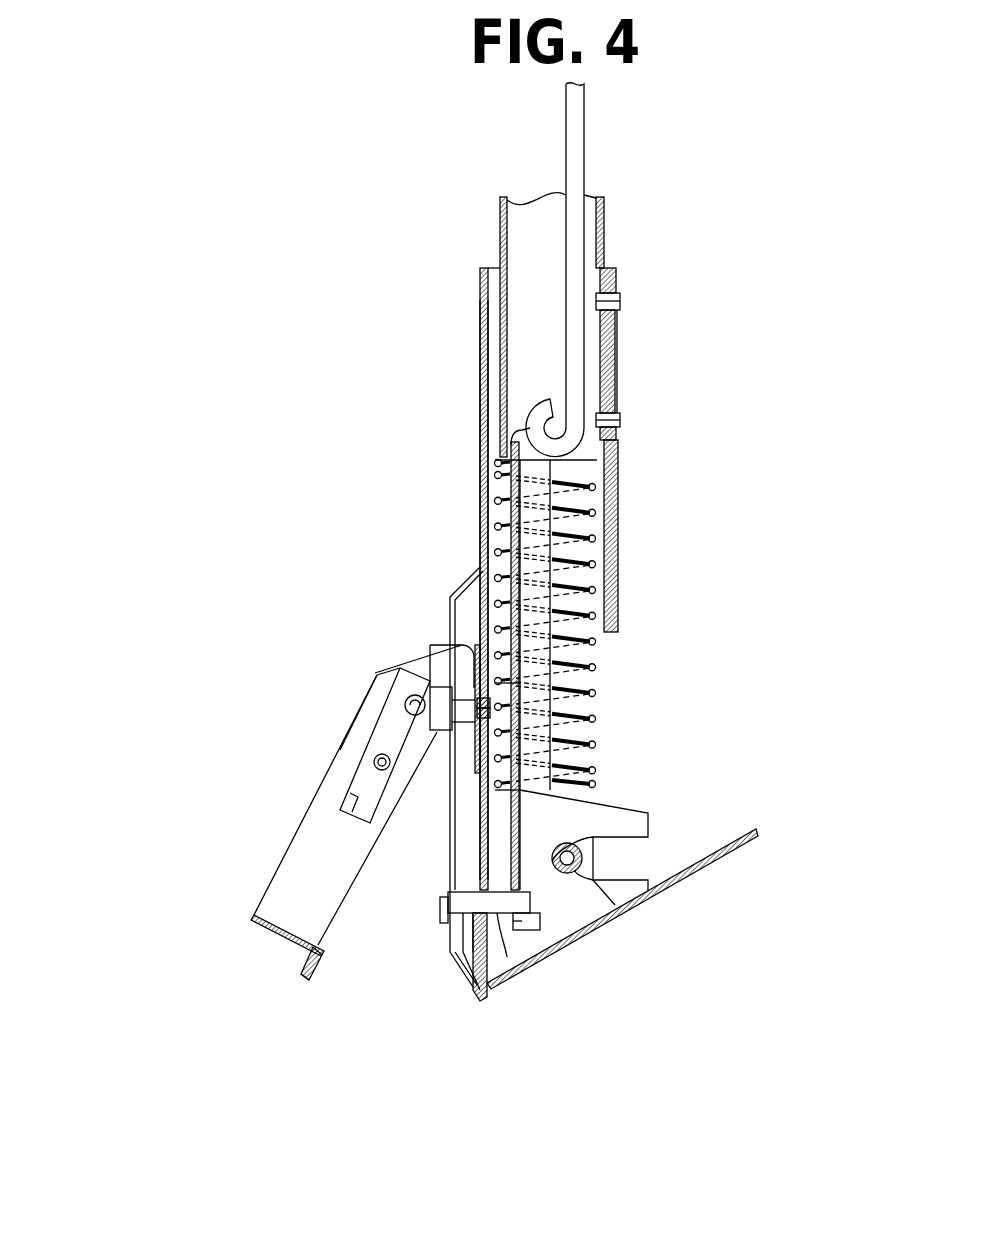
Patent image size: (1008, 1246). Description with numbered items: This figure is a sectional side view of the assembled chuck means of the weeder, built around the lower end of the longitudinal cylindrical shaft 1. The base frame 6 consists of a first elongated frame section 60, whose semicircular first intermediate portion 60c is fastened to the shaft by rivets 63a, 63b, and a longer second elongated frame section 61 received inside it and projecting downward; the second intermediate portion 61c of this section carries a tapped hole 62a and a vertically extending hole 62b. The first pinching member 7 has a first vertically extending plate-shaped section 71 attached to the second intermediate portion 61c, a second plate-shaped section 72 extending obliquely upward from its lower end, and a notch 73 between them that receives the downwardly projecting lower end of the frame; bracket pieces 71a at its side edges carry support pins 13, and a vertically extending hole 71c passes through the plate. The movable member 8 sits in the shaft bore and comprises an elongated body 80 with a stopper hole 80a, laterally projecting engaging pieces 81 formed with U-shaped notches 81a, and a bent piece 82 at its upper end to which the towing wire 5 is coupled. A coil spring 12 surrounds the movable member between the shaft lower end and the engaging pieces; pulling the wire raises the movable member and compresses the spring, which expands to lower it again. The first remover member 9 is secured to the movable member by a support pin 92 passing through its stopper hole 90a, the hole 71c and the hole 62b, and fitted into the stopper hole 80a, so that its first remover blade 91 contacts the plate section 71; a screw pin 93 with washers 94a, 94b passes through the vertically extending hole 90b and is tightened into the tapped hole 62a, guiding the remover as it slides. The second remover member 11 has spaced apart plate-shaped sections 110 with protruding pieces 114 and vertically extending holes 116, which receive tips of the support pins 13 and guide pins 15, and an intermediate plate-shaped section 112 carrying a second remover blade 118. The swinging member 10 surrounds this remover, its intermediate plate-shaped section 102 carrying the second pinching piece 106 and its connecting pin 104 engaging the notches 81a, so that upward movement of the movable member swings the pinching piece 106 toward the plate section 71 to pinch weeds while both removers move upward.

The longitudinal cylindrical shaft 1 is at (486, 198).
The towing wire 5 is at (578, 128).
The base frame 6 is at (464, 261).
The first pinching member 7 is at (724, 863).
The movable member 8 is at (644, 904).
The first remover member 9 is at (455, 578).
The swinging member 10 is at (230, 928).
The second remover member 11 is at (347, 968).
The coil spring 12 is at (620, 553).
The support pin 13 is at (375, 683).
The guide pin 15 is at (340, 752).
The first elongated frame section 60 is at (620, 505).
The first intermediate portion 60c is at (618, 368).
The second elongated frame section 61 is at (475, 430).
The second intermediate portion 61c is at (481, 318).
The tapped hole 62a is at (517, 683).
The vertically extending hole 62b is at (550, 790).
The rivet 63a is at (620, 285).
The rivet 63b is at (620, 435).
The first vertically extending plate-shaped section 71 is at (450, 955).
The bracket piece 71a is at (375, 672).
The vertically extending hole 71c is at (470, 895).
The second plate-shaped section 72 is at (743, 858).
The notch 73 is at (486, 1002).
The elongated body 80 is at (497, 490).
The stopper hole 80a is at (530, 925).
The engaging piece 81 is at (640, 830).
The notch 81a is at (627, 858).
The bent piece 82 is at (512, 431).
The stopper hole 90a is at (447, 905).
The vertically extending hole 90b is at (452, 646).
The first remover blade 91 is at (473, 988).
The support pin 92 is at (497, 937).
The screw pin 93 is at (442, 686).
The washer 94a is at (490, 703).
The washer 94b is at (490, 718).
The intermediate plate-shaped section 102 is at (262, 928).
The connecting pin 104 is at (592, 882).
The second pinching piece 106 is at (301, 979).
The spaced apart plate-shaped section 110 is at (325, 833).
The intermediate plate-shaped section 112 is at (292, 923).
The protruding piece 114 is at (433, 737).
The vertically extending hole 116 is at (362, 803).
The second remover blade 118 is at (292, 961).